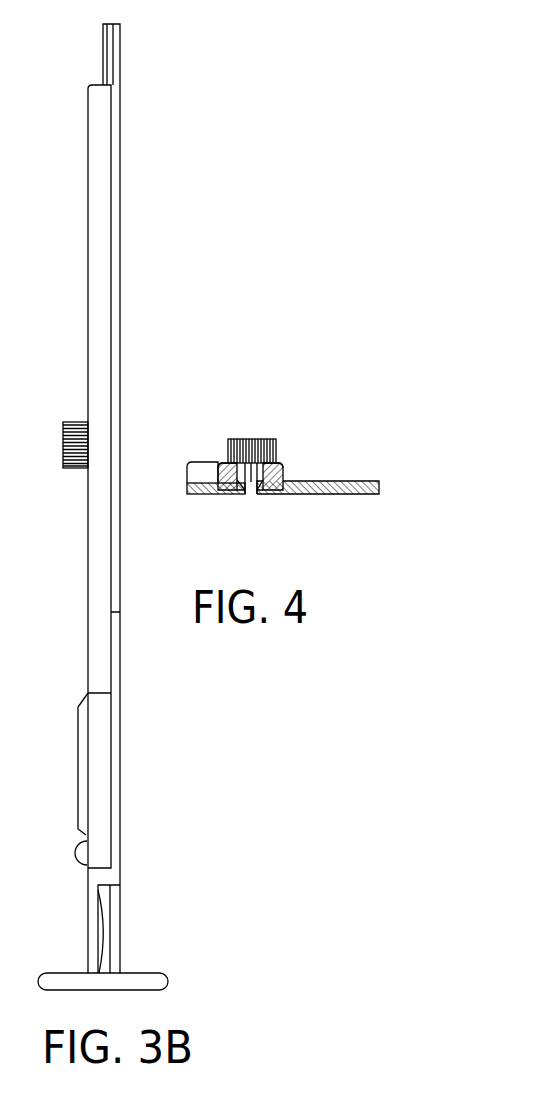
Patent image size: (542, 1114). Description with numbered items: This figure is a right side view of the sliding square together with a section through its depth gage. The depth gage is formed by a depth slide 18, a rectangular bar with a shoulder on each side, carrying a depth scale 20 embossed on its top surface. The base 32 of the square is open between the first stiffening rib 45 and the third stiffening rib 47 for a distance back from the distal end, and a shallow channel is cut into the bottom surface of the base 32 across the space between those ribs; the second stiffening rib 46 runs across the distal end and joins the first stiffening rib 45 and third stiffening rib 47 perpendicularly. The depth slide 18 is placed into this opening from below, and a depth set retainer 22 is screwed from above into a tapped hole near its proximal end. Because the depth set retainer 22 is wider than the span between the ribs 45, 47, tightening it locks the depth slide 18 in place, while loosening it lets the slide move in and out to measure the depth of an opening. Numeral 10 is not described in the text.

In FIG. 3B, the display assembly 10 is at (64, 294).
In FIG. 3B, the depth slide 18 is at (120, 58).
In FIG. 4, the depth slide 18 is at (232, 497).
In FIG. 3B, the depth scale 20 is at (103, 52).
In FIG. 4, the depth scale 20 is at (267, 463).
In FIG. 3B, the depth set retainer 22 is at (71, 468).
In FIG. 4, the depth set retainer 22 is at (238, 439).
In FIG. 4, the base 32 is at (195, 497).
In FIG. 4, the first stiffening rib 45 is at (218, 463).
In FIG. 4, the second stiffening rib 46 is at (191, 462).
In FIG. 4, the third stiffening rib 47 is at (280, 463).